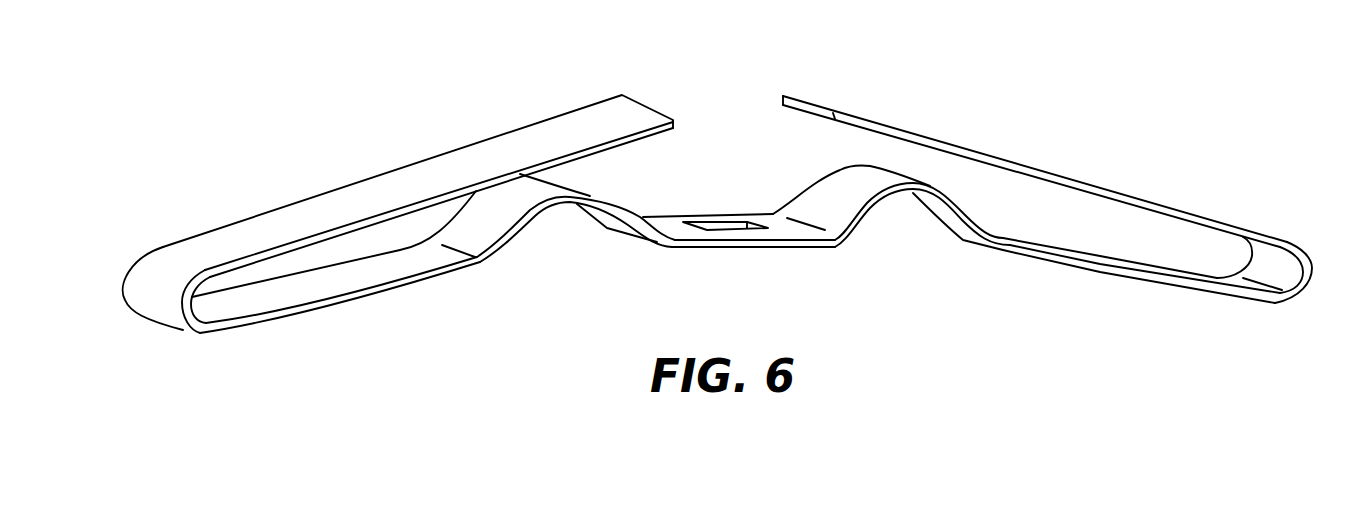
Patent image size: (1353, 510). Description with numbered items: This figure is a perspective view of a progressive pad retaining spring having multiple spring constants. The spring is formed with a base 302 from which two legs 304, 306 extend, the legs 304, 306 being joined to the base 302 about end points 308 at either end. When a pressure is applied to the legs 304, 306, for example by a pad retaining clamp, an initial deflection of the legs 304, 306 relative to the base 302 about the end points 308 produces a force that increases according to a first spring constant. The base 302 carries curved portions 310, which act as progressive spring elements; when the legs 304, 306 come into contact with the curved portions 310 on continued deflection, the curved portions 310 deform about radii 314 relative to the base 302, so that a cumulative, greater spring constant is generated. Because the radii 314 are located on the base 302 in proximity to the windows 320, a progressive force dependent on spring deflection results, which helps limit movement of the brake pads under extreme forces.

The base 302 is at (126, 210).
The leg 304 is at (427, 177).
The leg 306 is at (1094, 188).
The end points 308 is at (1311, 268).
The curved portions 310 is at (488, 218).
The radii 314 is at (843, 237).
The windows 320 is at (728, 226).